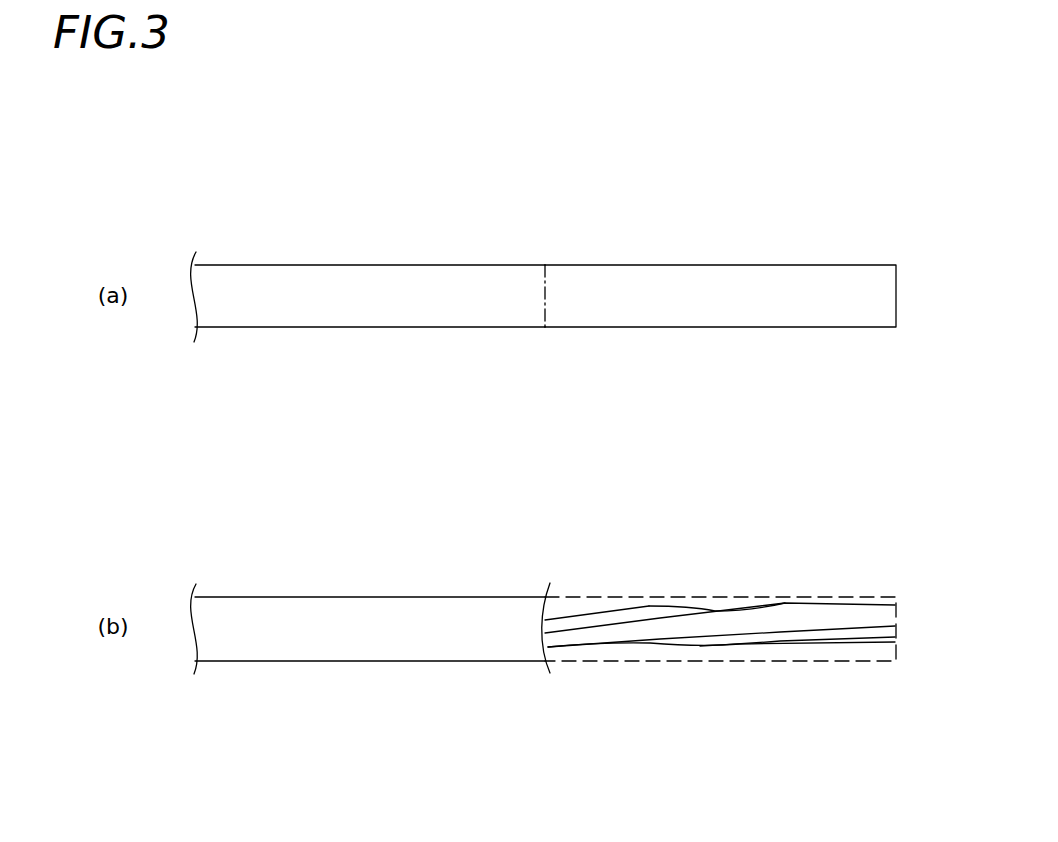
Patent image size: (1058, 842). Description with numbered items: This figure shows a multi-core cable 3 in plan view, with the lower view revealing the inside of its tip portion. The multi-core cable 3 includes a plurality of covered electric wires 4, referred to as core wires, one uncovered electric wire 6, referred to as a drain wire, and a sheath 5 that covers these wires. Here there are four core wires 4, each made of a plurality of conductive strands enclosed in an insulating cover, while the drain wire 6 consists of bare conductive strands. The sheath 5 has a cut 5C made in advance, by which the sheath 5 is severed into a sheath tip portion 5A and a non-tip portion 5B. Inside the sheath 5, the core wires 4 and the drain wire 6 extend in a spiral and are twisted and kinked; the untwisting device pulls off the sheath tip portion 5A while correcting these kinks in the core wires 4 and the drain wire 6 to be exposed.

The multi-core cable 3 is at (773, 172).
The covered electric wire 4 is at (573, 618).
The sheath 5 is at (262, 263).
The sheath tip portion 5A is at (832, 263).
The non-tip portion 5B is at (355, 263).
The cut 5C is at (545, 279).
The uncovered electric wire 6 is at (862, 637).